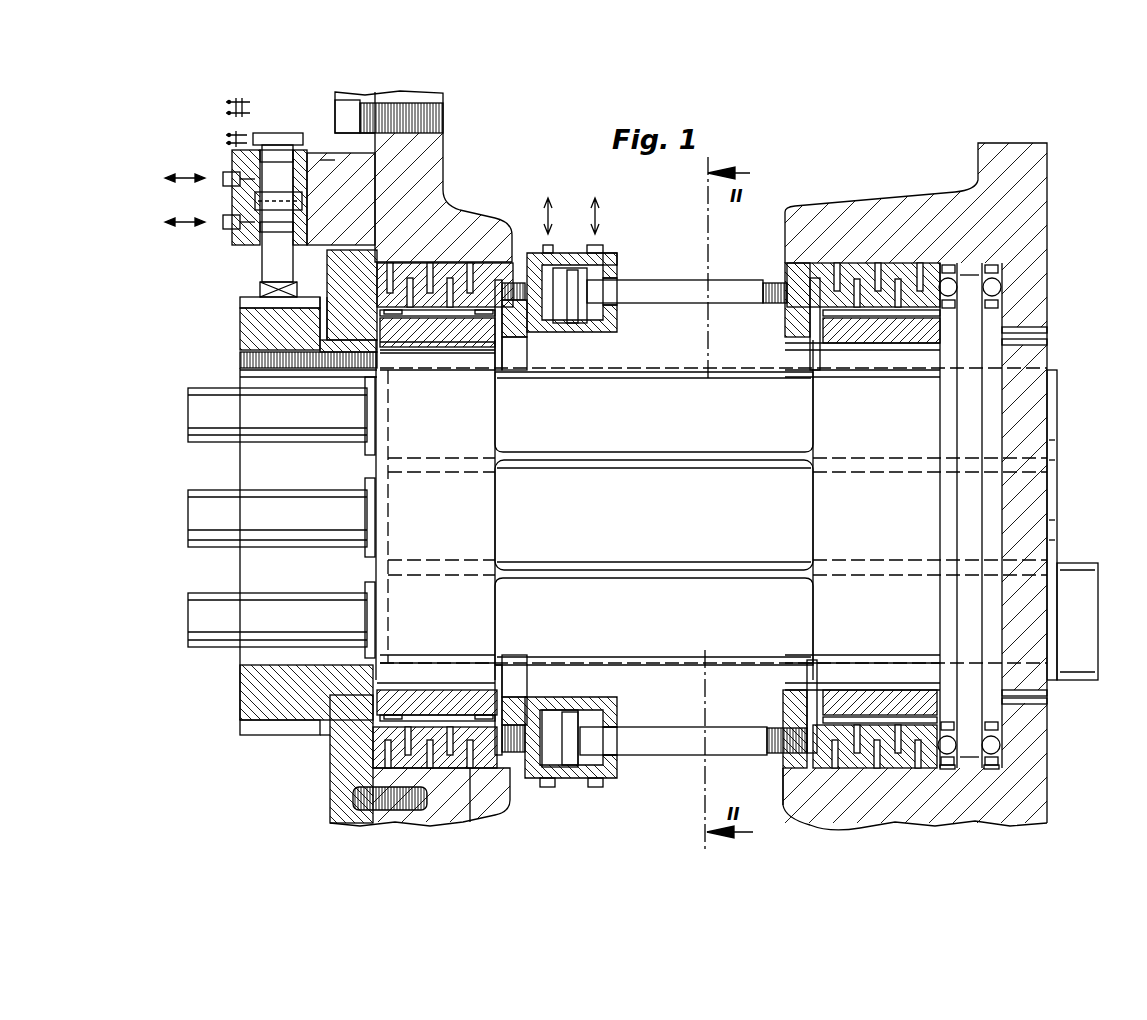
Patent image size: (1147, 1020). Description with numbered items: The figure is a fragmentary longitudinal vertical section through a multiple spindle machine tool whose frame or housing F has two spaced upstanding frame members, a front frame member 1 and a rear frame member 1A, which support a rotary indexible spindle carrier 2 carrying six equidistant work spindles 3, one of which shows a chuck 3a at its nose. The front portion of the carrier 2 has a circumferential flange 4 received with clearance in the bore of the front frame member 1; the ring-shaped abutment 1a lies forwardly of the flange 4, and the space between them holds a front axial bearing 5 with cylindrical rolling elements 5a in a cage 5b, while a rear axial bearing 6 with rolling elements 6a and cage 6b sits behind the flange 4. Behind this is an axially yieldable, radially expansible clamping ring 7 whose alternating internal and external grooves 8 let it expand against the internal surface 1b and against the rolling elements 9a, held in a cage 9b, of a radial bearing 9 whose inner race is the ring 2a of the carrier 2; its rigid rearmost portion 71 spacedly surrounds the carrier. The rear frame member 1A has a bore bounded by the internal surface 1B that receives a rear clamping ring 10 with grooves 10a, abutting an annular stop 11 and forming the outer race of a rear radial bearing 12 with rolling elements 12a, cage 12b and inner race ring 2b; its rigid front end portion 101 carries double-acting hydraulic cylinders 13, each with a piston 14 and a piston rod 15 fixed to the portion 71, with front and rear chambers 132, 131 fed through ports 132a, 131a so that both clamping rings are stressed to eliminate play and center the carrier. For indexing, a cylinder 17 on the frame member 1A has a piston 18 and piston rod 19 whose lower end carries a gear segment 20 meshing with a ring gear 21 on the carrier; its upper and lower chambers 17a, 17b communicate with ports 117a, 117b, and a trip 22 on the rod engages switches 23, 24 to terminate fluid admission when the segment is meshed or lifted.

The front frame member 1 is at (1035, 205).
The ring-shaped portion or abutment 1a is at (1043, 303).
The cylindrical internal surface 1b is at (900, 768).
The rear frame member 1A is at (430, 155).
The cylindrical internal surface 1B is at (450, 773).
The spindle carrier 2 is at (1027, 350).
The ring 2a is at (874, 330).
The ring 2b is at (445, 328).
The work spindle 3 is at (205, 607).
The chuck 3a is at (1083, 577).
The flange 4 is at (972, 422).
The front axial antifriction bearing 5 is at (995, 285).
The rolling elements 5a is at (993, 747).
The cage 5b is at (994, 768).
The rear axial antifriction bearing 6 is at (990, 267).
The rolling elements 6a is at (950, 740).
The cage 6b is at (947, 768).
The clamping ring 7 is at (893, 263).
The rearmost portion of clamping ring 71 is at (793, 318).
The annular grooves 8 is at (836, 263).
The radial antifriction bearing 9 is at (870, 263).
The rolling elements 9a is at (887, 717).
The cage 9b is at (830, 715).
The rear clamping ring 10 is at (445, 273).
The annular grooves 10a is at (470, 770).
The annular stop 11 is at (340, 733).
The rear radial antifriction bearing 12 is at (470, 307).
The rolling elements 12a is at (452, 715).
The cage 12b is at (392, 715).
The double-acting hydraulic cylinder 13 is at (617, 252).
The rear cylinder chamber 131 is at (560, 265).
The port 131a is at (543, 245).
The front cylinder chamber 132 is at (617, 273).
The port 132a is at (610, 237).
The piston 14 is at (580, 300).
The piston rod 15 is at (723, 283).
The double-acting cylinder 17 is at (237, 237).
The upper chamber 17a is at (266, 188).
The lower chamber 17b is at (292, 222).
The port 117a is at (227, 178).
The port 117b is at (227, 225).
The piston 18 is at (270, 202).
The piston rod 19 is at (273, 252).
The gear segment 20 is at (262, 288).
The ring gear 21 is at (247, 307).
The actuating element or trip 22 is at (280, 137).
The lower switch 23 is at (223, 140).
The upper switch 24 is at (223, 110).
The front end portion of clamping ring 101 is at (518, 327).
The frame or housing F is at (1047, 793).